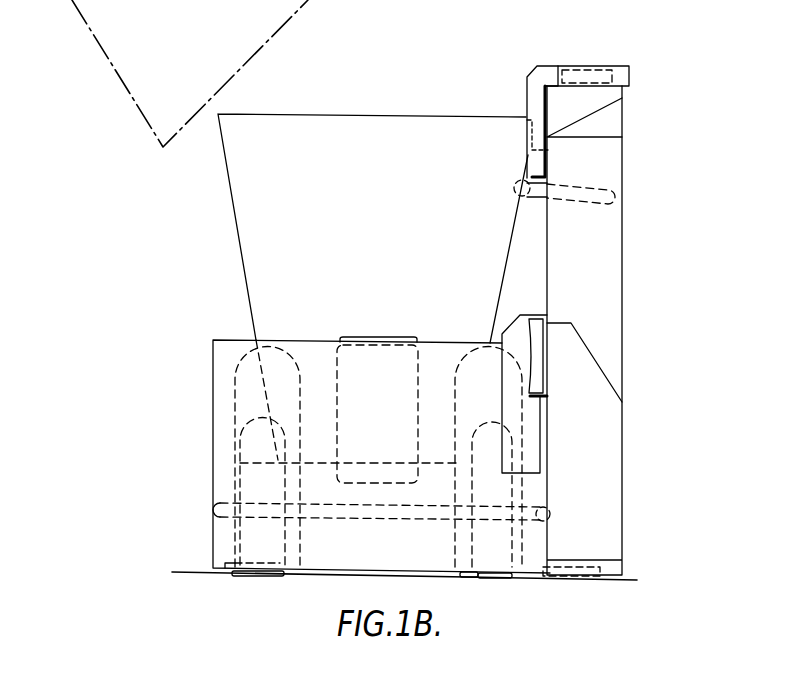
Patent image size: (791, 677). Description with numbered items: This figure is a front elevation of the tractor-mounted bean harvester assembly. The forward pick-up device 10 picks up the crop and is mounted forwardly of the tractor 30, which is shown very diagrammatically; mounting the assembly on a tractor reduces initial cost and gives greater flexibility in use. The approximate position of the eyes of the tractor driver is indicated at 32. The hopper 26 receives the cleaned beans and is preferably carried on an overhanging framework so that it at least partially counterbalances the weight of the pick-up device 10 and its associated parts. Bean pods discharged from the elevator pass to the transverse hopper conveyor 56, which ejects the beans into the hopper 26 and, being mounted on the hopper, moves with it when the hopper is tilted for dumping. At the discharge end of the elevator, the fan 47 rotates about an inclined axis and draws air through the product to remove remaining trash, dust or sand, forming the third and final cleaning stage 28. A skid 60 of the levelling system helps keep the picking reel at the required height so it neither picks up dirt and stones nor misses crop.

The forward pick-up device 10 is at (443, 342).
The hopper 26 is at (139, 111).
The third and final cleaning stage 28 is at (541, 96).
The tractor 30 is at (388, 484).
The position of the driver's eyes 32 is at (546, 264).
The fan 47 is at (589, 76).
The hopper conveyor 56 is at (540, 196).
The skid 60 is at (257, 573).